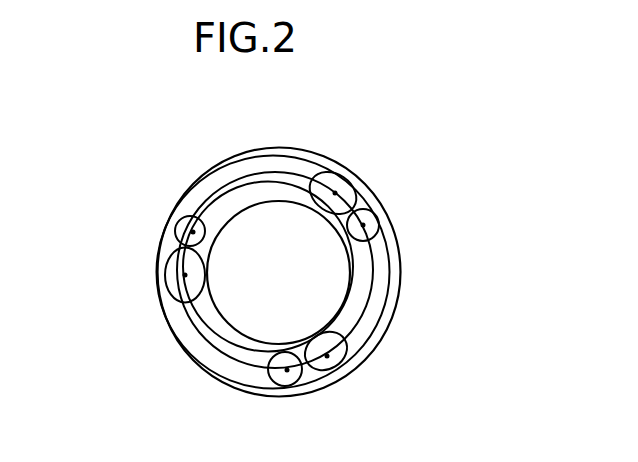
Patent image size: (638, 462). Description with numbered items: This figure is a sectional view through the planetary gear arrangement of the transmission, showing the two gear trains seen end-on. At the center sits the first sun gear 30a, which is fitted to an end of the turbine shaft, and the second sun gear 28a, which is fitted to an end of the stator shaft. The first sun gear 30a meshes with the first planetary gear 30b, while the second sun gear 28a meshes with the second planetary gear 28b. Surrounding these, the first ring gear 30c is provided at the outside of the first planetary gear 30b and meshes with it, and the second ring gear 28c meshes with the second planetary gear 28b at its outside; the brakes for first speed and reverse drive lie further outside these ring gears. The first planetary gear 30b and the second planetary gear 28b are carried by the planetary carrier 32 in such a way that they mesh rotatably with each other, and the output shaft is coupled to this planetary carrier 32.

The second sun gear 28a is at (195, 193).
The second planetary gear 28b is at (176, 320).
The second ring gear 28c is at (178, 347).
The first sun gear 30a is at (207, 368).
The first planetary gear 30b is at (182, 202).
The first ring gear 30c is at (233, 157).
The planetary carrier 32 is at (367, 312).